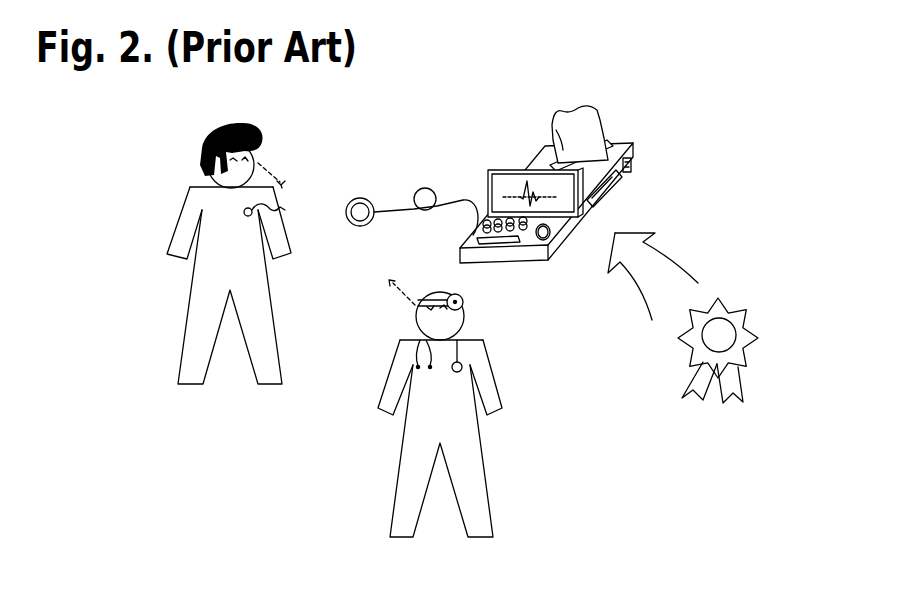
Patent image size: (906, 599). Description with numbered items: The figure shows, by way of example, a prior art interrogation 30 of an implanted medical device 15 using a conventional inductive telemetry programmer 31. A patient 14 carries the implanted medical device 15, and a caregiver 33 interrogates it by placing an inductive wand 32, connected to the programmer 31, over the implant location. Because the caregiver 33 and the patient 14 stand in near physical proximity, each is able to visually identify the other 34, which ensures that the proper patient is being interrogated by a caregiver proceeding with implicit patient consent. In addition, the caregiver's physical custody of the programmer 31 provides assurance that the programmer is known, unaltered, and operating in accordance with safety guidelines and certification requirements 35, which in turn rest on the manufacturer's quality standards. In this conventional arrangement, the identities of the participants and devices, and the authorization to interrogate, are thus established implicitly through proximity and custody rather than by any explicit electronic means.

The prior art interrogation 30 is at (168, 106).
The patient 14 is at (193, 318).
The implanted medical device 15 is at (276, 207).
The visual identification 34 is at (286, 162).
The inductive wand 32 is at (338, 176).
The inductive telemetry programmer 31 is at (631, 182).
The caregiver 33 is at (398, 492).
The safety guidelines and certification requirements 35 is at (622, 298).